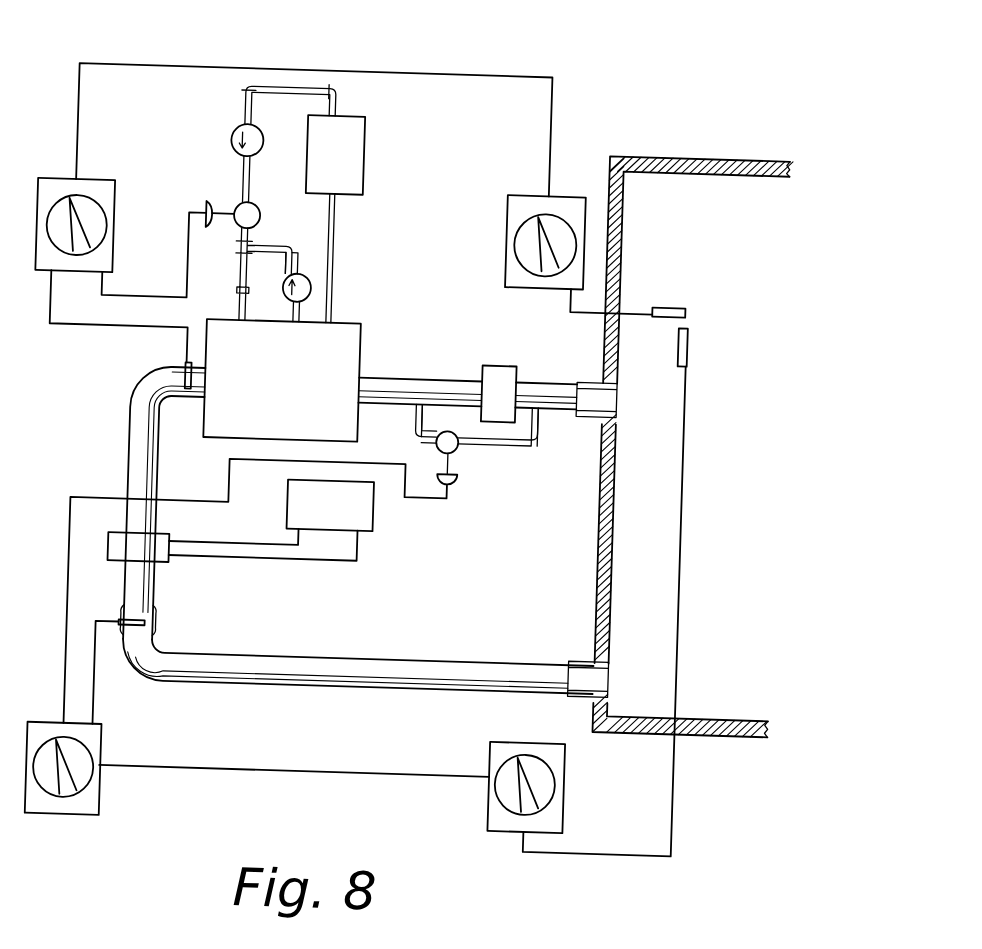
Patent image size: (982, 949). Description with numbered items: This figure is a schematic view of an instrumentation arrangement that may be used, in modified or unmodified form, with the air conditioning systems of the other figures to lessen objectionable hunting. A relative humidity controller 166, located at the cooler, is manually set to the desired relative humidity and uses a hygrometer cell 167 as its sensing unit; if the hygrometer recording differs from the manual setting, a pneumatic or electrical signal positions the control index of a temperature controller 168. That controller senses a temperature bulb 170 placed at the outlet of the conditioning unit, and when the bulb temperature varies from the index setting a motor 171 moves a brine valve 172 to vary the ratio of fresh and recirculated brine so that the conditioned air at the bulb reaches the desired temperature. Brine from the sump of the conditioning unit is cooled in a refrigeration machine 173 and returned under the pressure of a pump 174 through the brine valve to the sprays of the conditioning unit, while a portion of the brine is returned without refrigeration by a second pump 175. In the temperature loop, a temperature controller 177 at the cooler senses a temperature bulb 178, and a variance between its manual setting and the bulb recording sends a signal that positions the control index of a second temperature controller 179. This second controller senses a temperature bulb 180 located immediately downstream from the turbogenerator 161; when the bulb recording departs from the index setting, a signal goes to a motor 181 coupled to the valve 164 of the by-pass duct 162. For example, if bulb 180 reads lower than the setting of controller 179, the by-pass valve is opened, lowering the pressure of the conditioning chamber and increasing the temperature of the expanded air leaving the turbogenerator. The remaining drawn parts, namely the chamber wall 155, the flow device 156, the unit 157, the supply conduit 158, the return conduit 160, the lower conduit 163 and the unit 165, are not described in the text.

The chamber wall 155 is at (712, 185).
The flow regulating device 156 is at (500, 363).
The control unit 157 is at (357, 430).
The supply conduit 158 is at (420, 378).
The return conduit 160 is at (158, 469).
The turbogenerator 161 is at (172, 569).
The by-pass duct 162 is at (540, 430).
The return conduit bottom section 163 is at (392, 660).
The by-pass valve 164 is at (455, 450).
The control unit 165 is at (375, 532).
The relative humidity controller 166 is at (548, 192).
The hygrometer cell 167 is at (681, 303).
The temperature controller 168 is at (107, 250).
The temperature bulb 170 is at (182, 376).
The motor 171 is at (203, 206).
The brine valve 172 is at (254, 219).
The refrigeration machine 173 is at (355, 142).
The pump 174 is at (224, 136).
The pump 175 is at (306, 290).
The temperature controller 177 is at (574, 790).
The temperature bulb 178 is at (684, 338).
The second temperature controller 179 is at (80, 824).
The temperature bulb 180 is at (150, 630).
The motor 181 is at (458, 477).